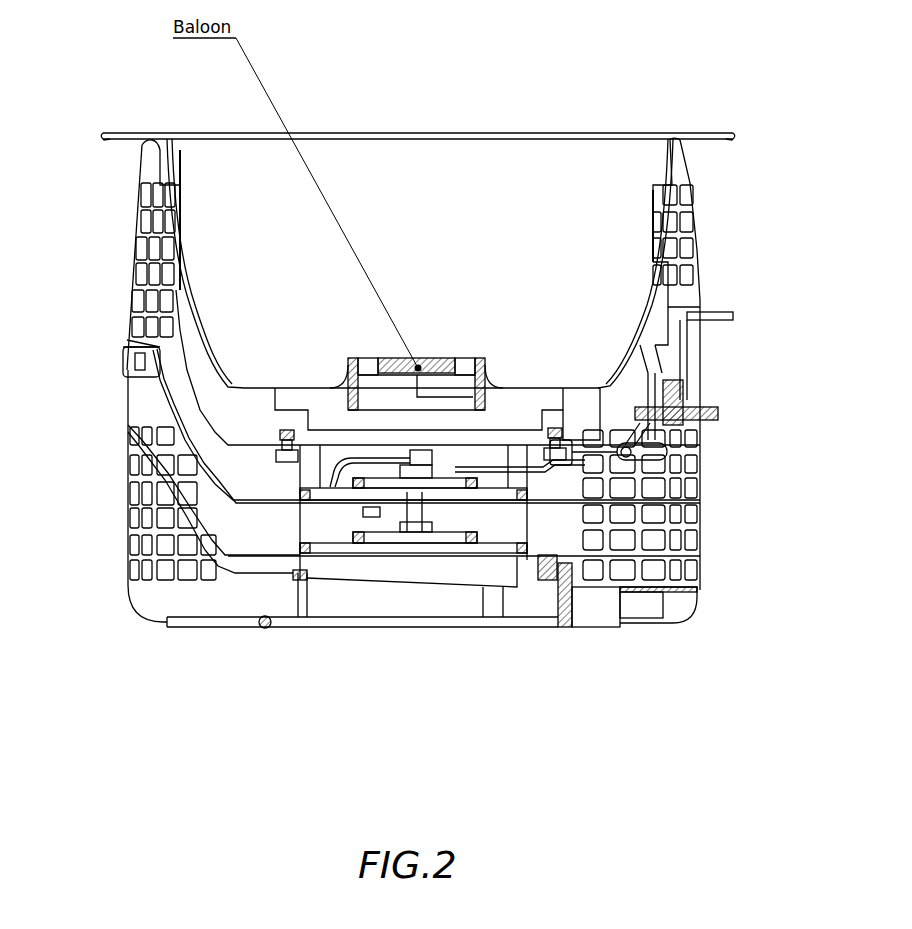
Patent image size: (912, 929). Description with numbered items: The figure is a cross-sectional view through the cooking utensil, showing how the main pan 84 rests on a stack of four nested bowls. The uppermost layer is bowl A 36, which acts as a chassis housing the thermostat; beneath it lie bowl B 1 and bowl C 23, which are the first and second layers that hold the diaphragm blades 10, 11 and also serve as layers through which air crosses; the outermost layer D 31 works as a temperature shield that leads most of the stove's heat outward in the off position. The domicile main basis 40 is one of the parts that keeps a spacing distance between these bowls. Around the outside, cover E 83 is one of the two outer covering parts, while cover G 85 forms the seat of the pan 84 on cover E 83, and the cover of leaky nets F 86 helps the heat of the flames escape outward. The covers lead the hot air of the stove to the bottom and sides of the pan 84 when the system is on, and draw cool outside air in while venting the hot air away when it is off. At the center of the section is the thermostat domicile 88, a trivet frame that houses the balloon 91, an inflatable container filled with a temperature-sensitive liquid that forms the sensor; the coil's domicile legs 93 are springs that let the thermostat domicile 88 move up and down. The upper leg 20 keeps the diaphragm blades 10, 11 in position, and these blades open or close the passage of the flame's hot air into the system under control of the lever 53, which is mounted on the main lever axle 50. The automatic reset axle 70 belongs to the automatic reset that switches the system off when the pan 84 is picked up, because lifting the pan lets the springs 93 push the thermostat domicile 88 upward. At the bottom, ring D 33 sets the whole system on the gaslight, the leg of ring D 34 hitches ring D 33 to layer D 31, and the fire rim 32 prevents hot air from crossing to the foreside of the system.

The bowl B 1 is at (180, 402).
The blade of diaphragm 10 is at (388, 483).
The blade of diaphragm 11 is at (343, 490).
The upper leg 20 is at (338, 455).
The bowl C 23 is at (157, 423).
The layer D 31 is at (208, 545).
The fire rim 32 is at (595, 607).
The ring D 33 is at (523, 623).
The leg of ring D 34 is at (565, 597).
The bowl A 36 is at (168, 272).
The domicile main basis 40 is at (563, 453).
The main lever axle 50 is at (655, 413).
The lever 53 is at (722, 316).
The automatic reset axle 70 is at (605, 458).
The cover E 83 is at (692, 295).
The main pan 84 is at (455, 222).
The cover G 85 is at (659, 167).
The cover of leaky nets F 86 is at (677, 608).
The thermostat domicile 88 is at (283, 410).
The balloon 91 is at (402, 368).
The coil's domicile legs 93 is at (283, 437).